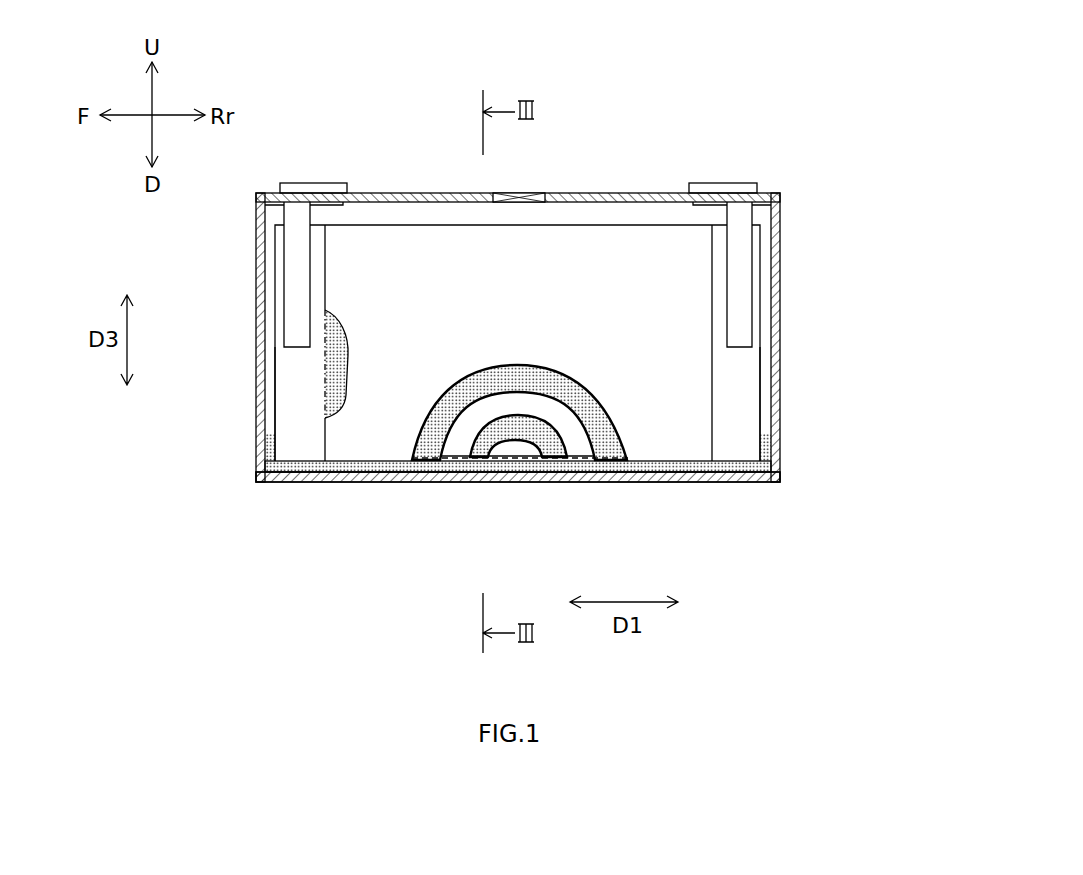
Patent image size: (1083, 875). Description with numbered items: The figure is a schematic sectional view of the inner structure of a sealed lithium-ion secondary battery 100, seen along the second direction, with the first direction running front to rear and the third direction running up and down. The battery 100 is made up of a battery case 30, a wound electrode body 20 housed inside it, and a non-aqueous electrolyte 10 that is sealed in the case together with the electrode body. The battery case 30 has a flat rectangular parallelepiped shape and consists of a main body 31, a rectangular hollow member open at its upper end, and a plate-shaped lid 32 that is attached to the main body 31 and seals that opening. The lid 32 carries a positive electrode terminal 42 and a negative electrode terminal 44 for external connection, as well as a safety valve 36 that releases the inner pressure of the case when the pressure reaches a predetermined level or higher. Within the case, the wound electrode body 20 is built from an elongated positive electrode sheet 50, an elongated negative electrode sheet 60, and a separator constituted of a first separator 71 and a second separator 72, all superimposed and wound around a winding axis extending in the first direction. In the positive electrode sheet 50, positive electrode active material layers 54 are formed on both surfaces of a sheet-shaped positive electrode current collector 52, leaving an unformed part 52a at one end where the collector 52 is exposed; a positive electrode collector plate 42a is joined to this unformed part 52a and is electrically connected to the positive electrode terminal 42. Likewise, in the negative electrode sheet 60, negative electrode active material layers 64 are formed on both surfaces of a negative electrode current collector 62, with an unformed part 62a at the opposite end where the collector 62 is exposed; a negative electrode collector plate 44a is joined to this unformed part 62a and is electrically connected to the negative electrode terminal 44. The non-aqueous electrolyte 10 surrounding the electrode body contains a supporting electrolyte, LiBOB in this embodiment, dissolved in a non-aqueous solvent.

The secondary battery 100 is at (840, 82).
The non-aqueous electrolyte 10 is at (683, 472).
The wound electrode body 20 is at (448, 213).
The battery case 30 is at (561, 347).
The main body 31 is at (780, 335).
The lid 32 is at (625, 193).
The safety valve 36 is at (526, 193).
The positive electrode terminal 42 is at (266, 238).
The positive electrode collector plate 42a is at (290, 262).
The negative electrode terminal 44 is at (775, 238).
The negative electrode collector plate 44a is at (750, 258).
The positive electrode sheet 50 is at (426, 458).
The positive electrode current collector 52 is at (257, 343).
The unformed part 52a is at (283, 411).
The positive electrode active material layer 54 is at (349, 340).
The negative electrode sheet 60 is at (490, 450).
The negative electrode current collector 62 is at (785, 343).
The unformed part 62a is at (750, 408).
The negative electrode active material layer 64 is at (518, 495).
The first separator 71 is at (346, 418).
The second separator 72 is at (466, 455).